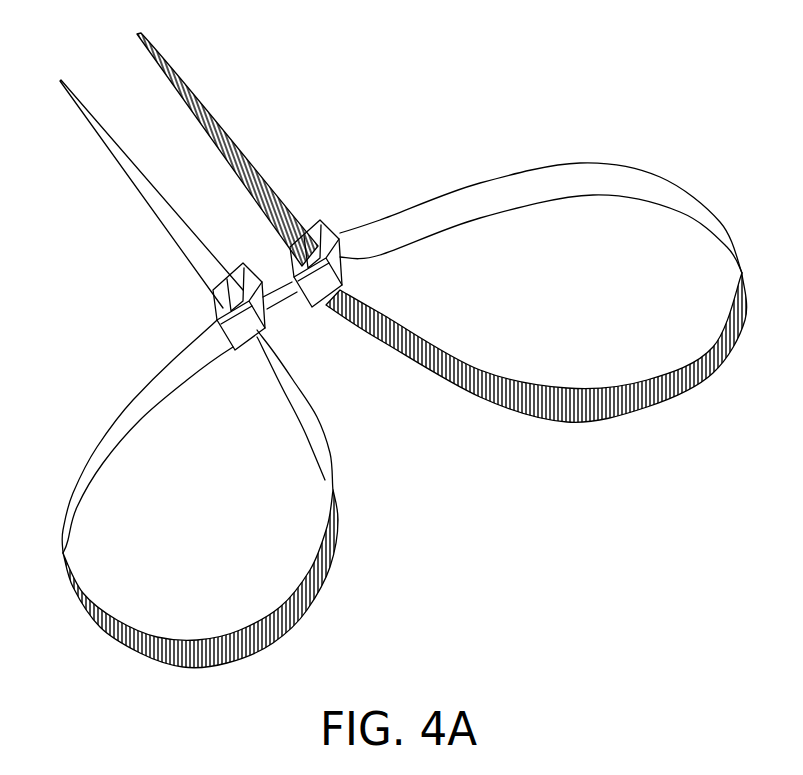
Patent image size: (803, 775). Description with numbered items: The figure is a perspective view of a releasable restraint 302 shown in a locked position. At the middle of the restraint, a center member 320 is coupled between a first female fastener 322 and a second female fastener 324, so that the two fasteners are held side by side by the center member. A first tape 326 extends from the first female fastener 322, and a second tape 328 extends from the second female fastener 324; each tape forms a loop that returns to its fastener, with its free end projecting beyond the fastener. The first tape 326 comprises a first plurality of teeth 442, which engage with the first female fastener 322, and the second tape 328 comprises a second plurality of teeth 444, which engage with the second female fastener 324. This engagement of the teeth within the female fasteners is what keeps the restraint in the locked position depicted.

The releasable restraint 302 is at (405, 96).
The center member 320 is at (286, 303).
The first female fastener 322 is at (212, 308).
The second female fastener 324 is at (305, 221).
The first tape 326 is at (127, 163).
The second tape 328 is at (199, 97).
The first plurality of teeth 442 is at (180, 627).
The second plurality of teeth 444 is at (590, 380).